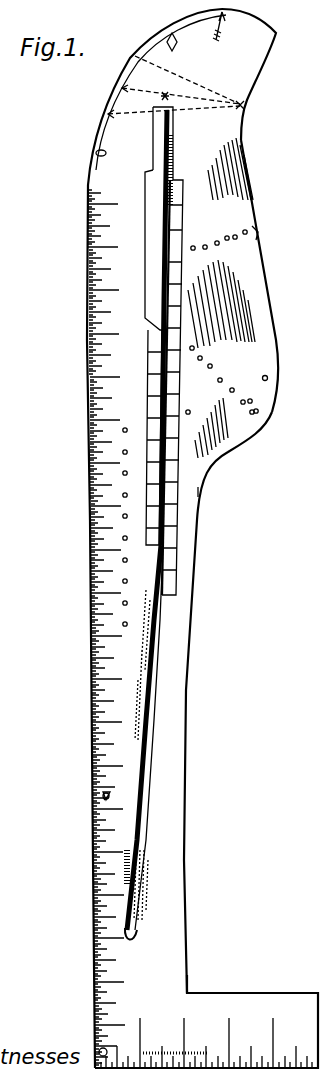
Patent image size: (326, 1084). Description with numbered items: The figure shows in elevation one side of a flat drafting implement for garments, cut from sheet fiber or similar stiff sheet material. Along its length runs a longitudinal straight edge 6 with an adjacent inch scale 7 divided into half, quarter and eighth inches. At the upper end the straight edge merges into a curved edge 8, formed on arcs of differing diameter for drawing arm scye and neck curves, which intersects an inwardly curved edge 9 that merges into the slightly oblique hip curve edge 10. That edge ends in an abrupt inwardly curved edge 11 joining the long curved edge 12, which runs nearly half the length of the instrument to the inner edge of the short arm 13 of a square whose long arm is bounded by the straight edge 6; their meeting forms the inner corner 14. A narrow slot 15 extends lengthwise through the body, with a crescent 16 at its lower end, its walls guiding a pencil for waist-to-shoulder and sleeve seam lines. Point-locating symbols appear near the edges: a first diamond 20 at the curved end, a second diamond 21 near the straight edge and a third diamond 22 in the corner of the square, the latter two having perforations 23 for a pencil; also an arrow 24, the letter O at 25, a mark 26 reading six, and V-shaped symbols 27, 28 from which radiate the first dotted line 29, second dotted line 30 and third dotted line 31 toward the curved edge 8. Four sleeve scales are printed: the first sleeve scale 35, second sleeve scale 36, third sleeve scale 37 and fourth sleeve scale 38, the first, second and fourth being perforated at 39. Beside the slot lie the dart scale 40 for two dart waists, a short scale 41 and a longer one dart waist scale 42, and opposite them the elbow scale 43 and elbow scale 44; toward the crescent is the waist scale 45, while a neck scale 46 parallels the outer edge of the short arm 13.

The longitudinal straight edge 6 is at (89, 379).
The inch scale 7 is at (88, 520).
The curved edge 8 is at (124, 68).
The inwardly curved edge 9 is at (257, 72).
The hip curve edge 10 is at (250, 187).
The abrupt inwardly curved edge 11 is at (250, 437).
The long curved edge 12 is at (190, 659).
The short arm of the square 13 is at (250, 1002).
The inner corner 14 is at (196, 991).
The slot 15 is at (157, 622).
The crescent 16 is at (136, 940).
The 1st diamond 20 is at (170, 35).
The 2nd diamond 21 is at (107, 801).
The 3rd diamond 22 is at (100, 1050).
The perforations 23 is at (104, 797).
The arrow 24 is at (220, 28).
The letter O 25 is at (96, 153).
The numeral 6 symbol 26 is at (270, 378).
The V-shaped symbol 27 is at (110, 114).
The V-shaped symbol 28 is at (245, 106).
The 1st dotted line 29 is at (136, 58).
The 2nd dotted line 30 is at (122, 89).
The 3rd dotted line 31 is at (129, 113).
The 1st sleeve scale 35 is at (256, 238).
The 2nd sleeve scale 36 is at (259, 410).
The 3rd sleeve scale 37 is at (205, 270).
The 4th sleeve scale 38 is at (122, 550).
The perforations 39 is at (225, 245).
The dart scale 40 is at (165, 164).
The short scale 41 is at (150, 208).
The one dart waist scale 42 is at (153, 372).
The elbow scale (1) 43 is at (182, 404).
The elbow scale (2) 44 is at (198, 492).
The waist scale 45 is at (140, 860).
The neck scale 46 is at (159, 1036).